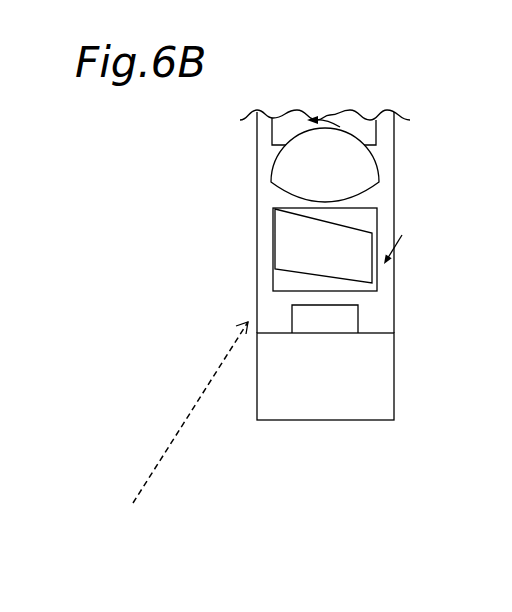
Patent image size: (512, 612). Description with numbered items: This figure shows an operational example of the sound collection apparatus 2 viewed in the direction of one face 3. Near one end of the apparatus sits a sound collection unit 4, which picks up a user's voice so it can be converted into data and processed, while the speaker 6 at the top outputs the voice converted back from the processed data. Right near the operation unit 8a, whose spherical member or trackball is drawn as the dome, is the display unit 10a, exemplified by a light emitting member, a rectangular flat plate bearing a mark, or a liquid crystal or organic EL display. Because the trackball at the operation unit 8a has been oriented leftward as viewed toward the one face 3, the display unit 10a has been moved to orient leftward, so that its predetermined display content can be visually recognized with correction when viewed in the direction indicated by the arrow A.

The sound collection apparatus 2 is at (394, 280).
The one face 3 is at (383, 375).
The sound collection unit 4 is at (358, 318).
The speaker 6 is at (367, 130).
The operation unit 8a is at (368, 162).
The display unit 10a is at (355, 231).
The arrow A is at (173, 443).